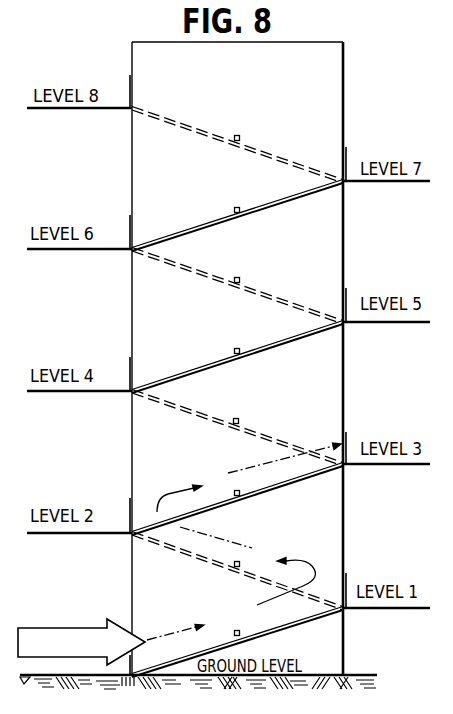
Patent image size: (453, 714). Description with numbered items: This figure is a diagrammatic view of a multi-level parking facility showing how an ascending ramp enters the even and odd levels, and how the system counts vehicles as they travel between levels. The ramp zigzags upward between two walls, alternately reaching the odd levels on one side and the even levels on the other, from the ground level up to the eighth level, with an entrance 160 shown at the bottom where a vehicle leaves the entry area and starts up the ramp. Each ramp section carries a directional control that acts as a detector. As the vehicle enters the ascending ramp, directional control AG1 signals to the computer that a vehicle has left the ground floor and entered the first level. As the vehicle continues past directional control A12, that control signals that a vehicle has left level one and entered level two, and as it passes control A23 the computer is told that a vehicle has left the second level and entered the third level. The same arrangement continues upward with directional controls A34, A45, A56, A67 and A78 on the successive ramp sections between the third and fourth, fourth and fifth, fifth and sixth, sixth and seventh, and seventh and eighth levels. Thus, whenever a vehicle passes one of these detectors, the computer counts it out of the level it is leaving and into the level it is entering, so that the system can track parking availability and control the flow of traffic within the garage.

The directional control A78 is at (240, 135).
The directional control A67 is at (235, 207).
The directional control A56 is at (240, 277).
The directional control A45 is at (235, 348).
The directional control A34 is at (239, 418).
The directional control A23 is at (236, 491).
The directional control A12 is at (240, 562).
The directional control AG1 is at (236, 631).
The entrance 160 is at (49, 626).